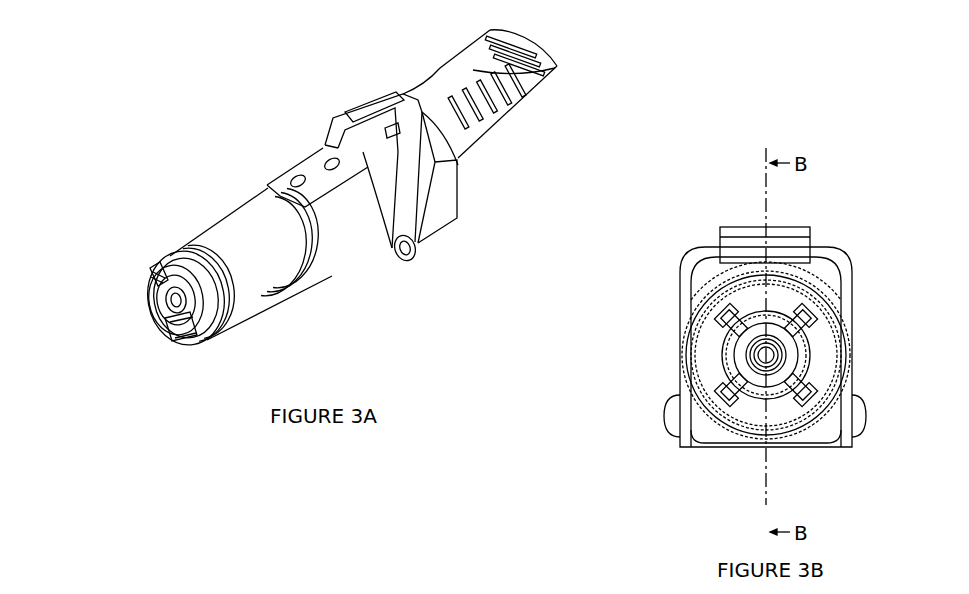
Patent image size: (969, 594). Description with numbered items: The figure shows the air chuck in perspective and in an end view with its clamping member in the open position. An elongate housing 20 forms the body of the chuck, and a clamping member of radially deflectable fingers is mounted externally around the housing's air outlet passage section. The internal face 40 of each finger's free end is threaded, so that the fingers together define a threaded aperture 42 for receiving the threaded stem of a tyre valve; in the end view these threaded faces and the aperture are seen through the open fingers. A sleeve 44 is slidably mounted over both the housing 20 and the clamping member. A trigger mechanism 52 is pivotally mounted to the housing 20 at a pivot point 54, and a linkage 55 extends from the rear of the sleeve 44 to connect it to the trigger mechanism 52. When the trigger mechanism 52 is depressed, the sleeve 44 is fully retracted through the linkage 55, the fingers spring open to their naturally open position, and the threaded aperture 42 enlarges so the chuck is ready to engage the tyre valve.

The elongate housing 20 is at (443, 203).
The internal face 40 is at (160, 290).
The threaded aperture 42 is at (177, 330).
The sleeve 44 is at (338, 240).
The trigger mechanism 52 is at (522, 88).
The pivot point 54 is at (413, 257).
The linkage 55 is at (345, 105).